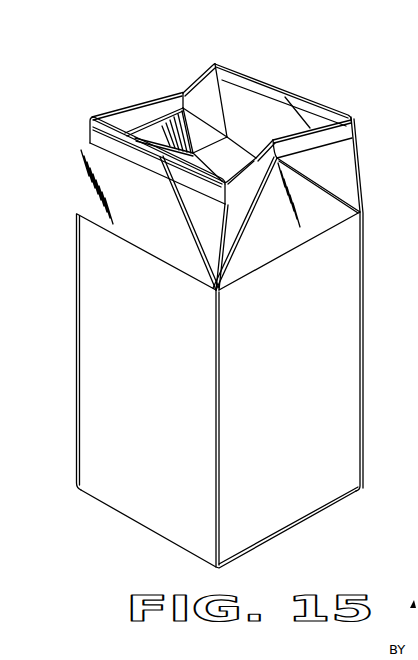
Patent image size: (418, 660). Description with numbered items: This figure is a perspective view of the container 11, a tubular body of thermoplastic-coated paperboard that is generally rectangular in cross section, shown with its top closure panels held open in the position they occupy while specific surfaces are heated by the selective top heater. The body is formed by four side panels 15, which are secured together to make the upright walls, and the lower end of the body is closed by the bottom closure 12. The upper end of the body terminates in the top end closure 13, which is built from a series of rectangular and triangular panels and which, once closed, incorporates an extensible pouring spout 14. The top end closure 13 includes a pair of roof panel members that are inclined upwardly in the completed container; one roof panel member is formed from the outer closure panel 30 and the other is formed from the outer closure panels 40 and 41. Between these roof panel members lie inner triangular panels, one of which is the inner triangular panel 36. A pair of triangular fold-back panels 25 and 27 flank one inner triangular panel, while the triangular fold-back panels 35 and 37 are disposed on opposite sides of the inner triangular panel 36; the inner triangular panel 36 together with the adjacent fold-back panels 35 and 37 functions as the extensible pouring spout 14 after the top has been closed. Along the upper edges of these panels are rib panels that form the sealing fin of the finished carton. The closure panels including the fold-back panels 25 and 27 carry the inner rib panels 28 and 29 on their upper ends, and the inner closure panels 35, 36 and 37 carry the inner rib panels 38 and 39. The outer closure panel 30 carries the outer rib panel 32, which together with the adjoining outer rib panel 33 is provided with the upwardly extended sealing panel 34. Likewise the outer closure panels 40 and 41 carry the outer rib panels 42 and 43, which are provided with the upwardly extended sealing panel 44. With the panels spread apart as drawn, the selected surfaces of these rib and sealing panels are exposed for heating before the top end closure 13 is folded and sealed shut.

The container 11 is at (76, 360).
The bottom closure 12 is at (294, 537).
The top end closure 13 is at (365, 178).
The extensible pouring spout 14 is at (347, 192).
The side panels 15 is at (220, 342).
The triangular fold-back panel 25 is at (153, 127).
The triangular fold-back panel 27 is at (214, 63).
The inner rib panel 28 is at (141, 117).
The inner rib panel 29 is at (197, 88).
The outer closure panel 30 is at (248, 100).
The outer rib panel 32 is at (264, 94).
The outer rib panel 33 is at (349, 109).
The sealing panel 34 is at (318, 118).
The triangular fold-back panel 35 is at (314, 156).
The inner triangular panel 36 is at (302, 218).
The triangular fold-back panel 37 is at (229, 223).
The inner rib panel 38 is at (341, 136).
The inner rib panel 39 is at (246, 180).
The outer closure panel 40 is at (197, 226).
The outer closure panel 41 is at (119, 187).
The outer rib panel 42 is at (186, 178).
The outer rib panel 43 is at (97, 138).
The sealing panel 44 is at (99, 116).